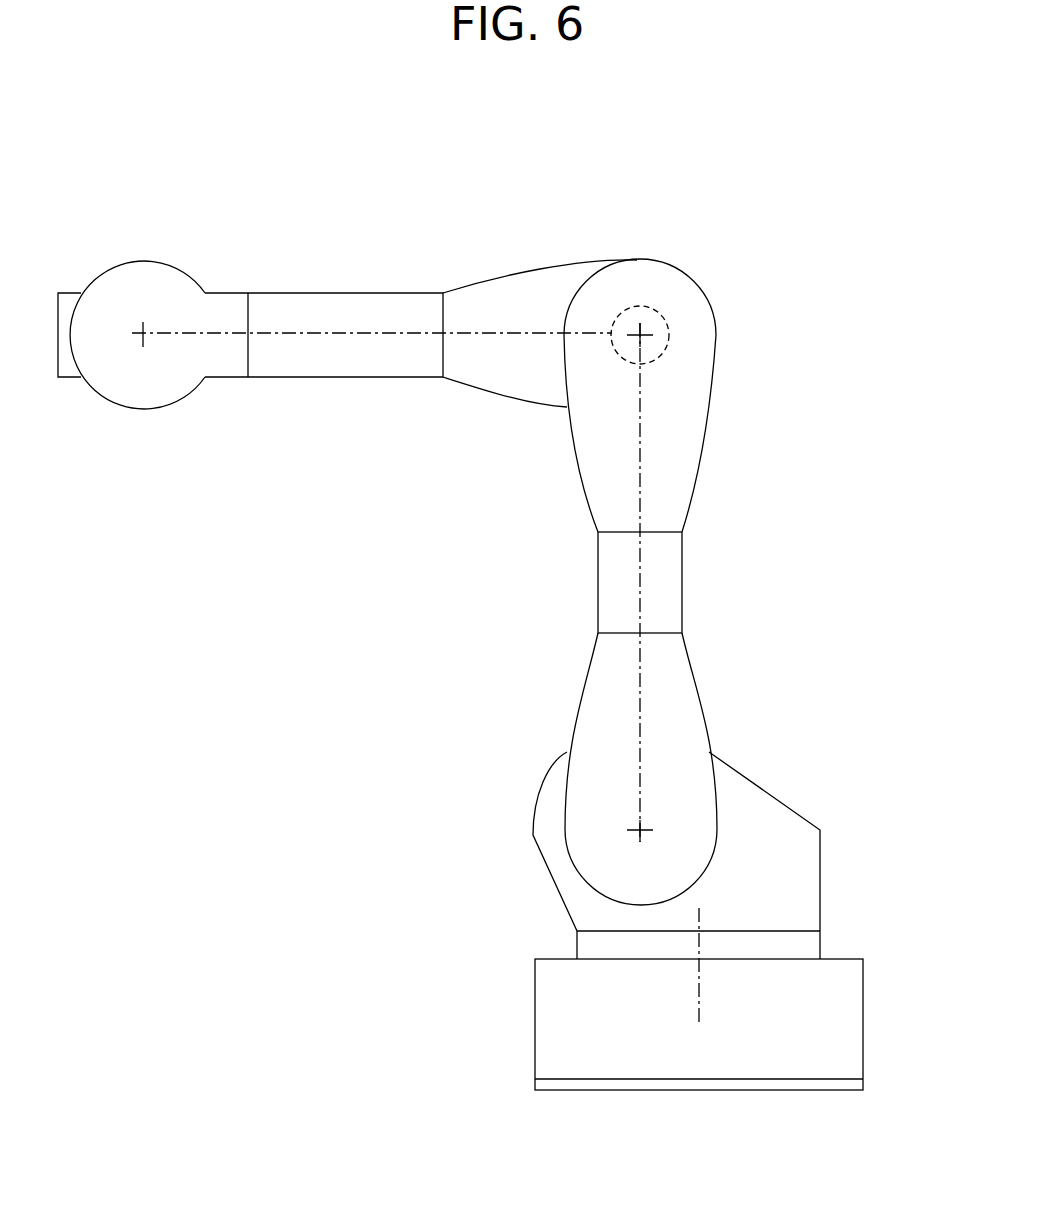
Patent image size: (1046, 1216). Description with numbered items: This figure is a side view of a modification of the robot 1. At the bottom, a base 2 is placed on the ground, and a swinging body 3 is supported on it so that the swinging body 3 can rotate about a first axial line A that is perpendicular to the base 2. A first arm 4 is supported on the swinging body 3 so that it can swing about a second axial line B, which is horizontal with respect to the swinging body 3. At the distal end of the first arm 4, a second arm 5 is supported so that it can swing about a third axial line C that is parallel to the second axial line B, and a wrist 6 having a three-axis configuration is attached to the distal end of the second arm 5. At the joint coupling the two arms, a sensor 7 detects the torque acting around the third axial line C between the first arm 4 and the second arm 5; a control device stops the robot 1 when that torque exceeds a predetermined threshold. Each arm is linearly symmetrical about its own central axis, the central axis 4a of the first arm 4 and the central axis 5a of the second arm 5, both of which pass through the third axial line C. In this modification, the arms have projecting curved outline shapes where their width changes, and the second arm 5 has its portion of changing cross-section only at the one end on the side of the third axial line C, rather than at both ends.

The robot 1 is at (738, 226).
The base 2 is at (864, 1018).
The swinging body 3 is at (821, 890).
The first arm 4 is at (710, 422).
The central axis of first arm 4a is at (640, 478).
The second arm 5 is at (383, 293).
The central axis of second arm 5a is at (314, 335).
The wrist 6 is at (136, 248).
The sensor 7 is at (636, 305).
The first axial line A is at (699, 990).
The second axial line B is at (640, 830).
The third axial line C is at (640, 335).